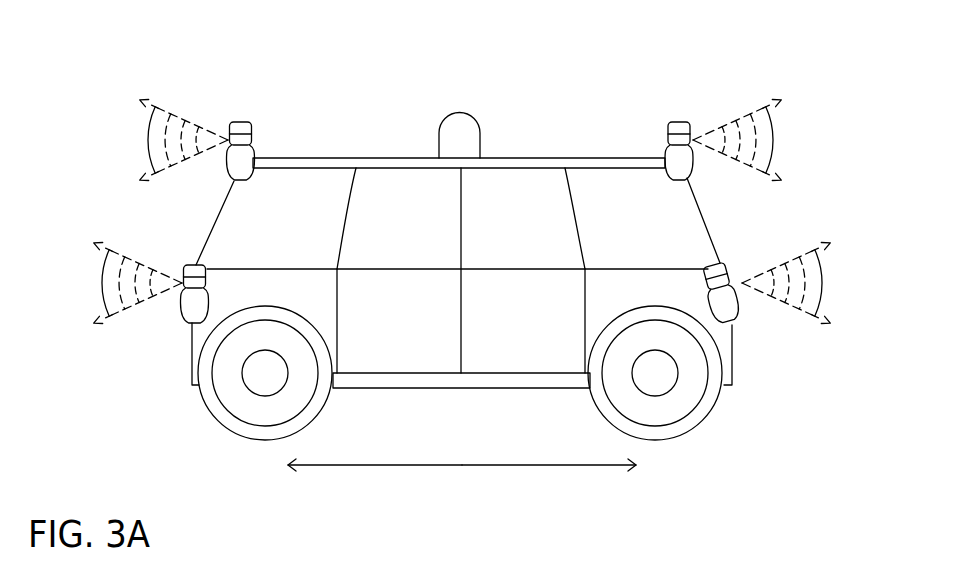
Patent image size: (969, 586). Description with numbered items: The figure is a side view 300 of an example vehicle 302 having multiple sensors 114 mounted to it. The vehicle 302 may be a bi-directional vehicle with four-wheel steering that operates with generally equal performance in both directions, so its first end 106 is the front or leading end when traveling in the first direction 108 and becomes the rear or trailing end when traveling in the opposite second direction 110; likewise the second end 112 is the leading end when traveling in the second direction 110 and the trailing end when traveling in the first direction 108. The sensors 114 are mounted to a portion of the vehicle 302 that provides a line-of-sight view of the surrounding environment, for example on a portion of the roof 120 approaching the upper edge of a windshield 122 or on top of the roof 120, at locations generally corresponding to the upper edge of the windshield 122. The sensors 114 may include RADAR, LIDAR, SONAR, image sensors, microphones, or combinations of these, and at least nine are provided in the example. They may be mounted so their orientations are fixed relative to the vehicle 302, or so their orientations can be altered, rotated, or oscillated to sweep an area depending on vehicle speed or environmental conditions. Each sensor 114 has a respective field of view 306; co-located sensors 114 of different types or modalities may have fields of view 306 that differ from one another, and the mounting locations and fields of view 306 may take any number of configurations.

The side view 300 is at (278, 40).
The vehicle 302 is at (382, 172).
The fields of view 306 is at (152, 128).
The sensors 114 is at (239, 122).
The roof 120 is at (640, 175).
The windshield 122 is at (696, 215).
The second end 112 is at (192, 355).
The first end 106 is at (734, 343).
The second direction 110 is at (372, 481).
The first direction 108 is at (552, 481).